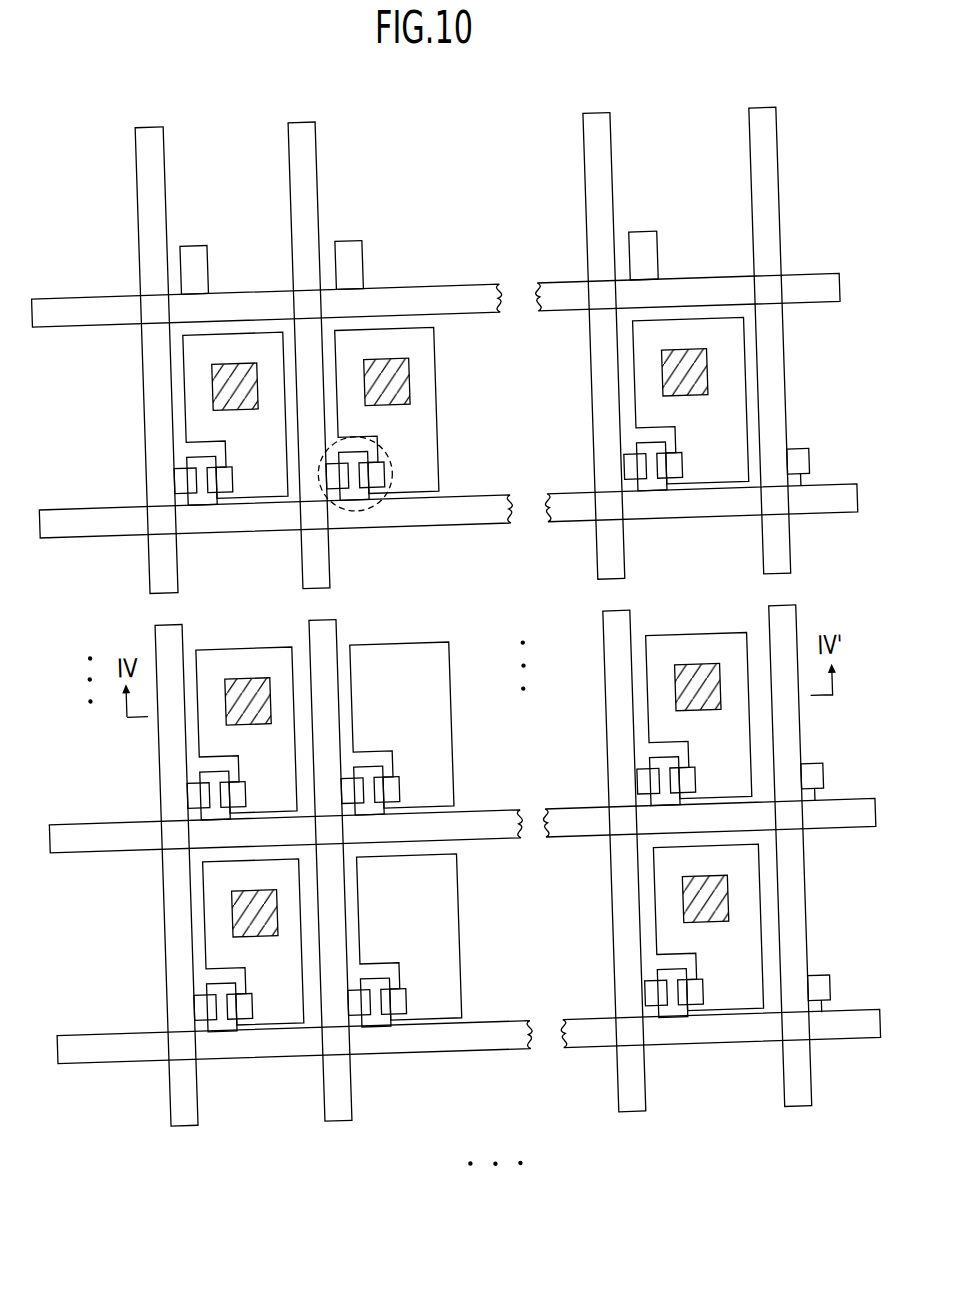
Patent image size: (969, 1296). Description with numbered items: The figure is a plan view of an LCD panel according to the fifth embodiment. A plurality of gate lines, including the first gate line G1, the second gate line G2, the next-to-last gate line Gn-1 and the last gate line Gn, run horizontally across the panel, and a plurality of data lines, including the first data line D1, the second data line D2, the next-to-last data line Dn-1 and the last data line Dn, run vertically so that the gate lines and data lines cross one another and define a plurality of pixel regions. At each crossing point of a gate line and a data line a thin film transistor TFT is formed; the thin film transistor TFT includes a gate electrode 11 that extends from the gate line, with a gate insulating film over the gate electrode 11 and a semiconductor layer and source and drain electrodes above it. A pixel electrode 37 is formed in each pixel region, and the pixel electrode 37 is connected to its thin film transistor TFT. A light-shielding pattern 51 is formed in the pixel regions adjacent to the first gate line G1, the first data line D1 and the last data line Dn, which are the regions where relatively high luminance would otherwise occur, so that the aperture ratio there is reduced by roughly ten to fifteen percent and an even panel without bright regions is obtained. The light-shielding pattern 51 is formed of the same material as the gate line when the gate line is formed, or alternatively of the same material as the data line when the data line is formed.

The gate electrode 11 is at (186, 252).
The pixel electrode 37 is at (383, 653).
The light-shielding pattern 51 is at (225, 686).
The thin film transistor TFT is at (377, 487).
The first gate line G1 is at (58, 302).
The second gate line G2 is at (61, 510).
The (n-1)th gate line Gn-1 is at (64, 828).
The last gate line Gn is at (64, 1040).
The first data line D1 is at (151, 1133).
The second data line D2 is at (304, 1132).
The (n-1)th data line Dn-1 is at (601, 1133).
The last data line Dn is at (765, 1131).